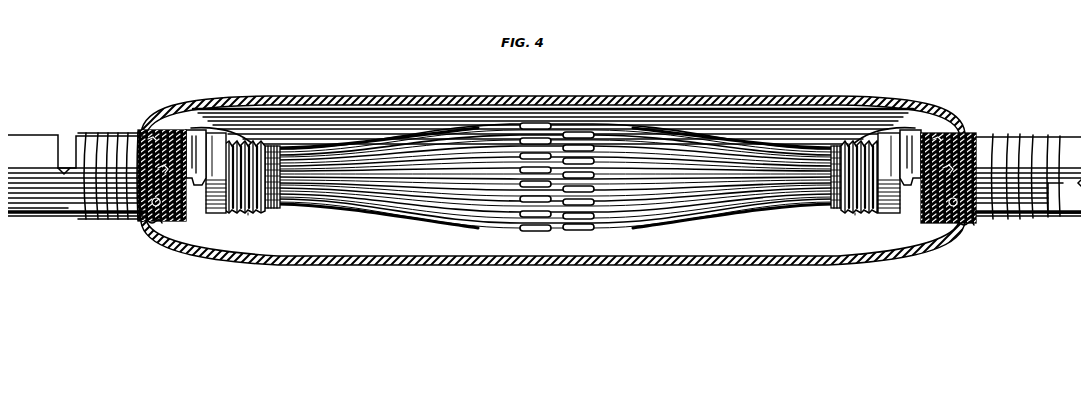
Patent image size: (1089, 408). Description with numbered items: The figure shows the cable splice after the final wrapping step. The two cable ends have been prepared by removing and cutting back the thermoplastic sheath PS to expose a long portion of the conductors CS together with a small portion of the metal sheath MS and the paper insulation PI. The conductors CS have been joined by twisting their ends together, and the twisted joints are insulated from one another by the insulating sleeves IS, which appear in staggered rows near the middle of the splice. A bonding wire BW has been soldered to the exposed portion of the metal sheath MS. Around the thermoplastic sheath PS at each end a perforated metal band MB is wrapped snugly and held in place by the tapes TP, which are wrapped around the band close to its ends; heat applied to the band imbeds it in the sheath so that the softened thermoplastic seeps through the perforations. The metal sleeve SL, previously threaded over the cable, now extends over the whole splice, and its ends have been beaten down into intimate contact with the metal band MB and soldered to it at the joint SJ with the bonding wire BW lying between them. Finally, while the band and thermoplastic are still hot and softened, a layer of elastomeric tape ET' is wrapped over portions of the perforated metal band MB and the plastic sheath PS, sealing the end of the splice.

The elastomeric tape ET' is at (544, 142).
The soldered joint SJ is at (135, 122).
The tapes TP is at (188, 135).
The bonding wire BW is at (204, 133).
The paper insulation PI is at (260, 145).
The metal sleeve SL is at (375, 87).
The insulating sleeves IS is at (525, 118).
The conductors CS is at (590, 123).
The thermoplastic sheath PS is at (35, 180).
The perforated metal band MB is at (150, 216).
The metal sheath MS is at (240, 208).